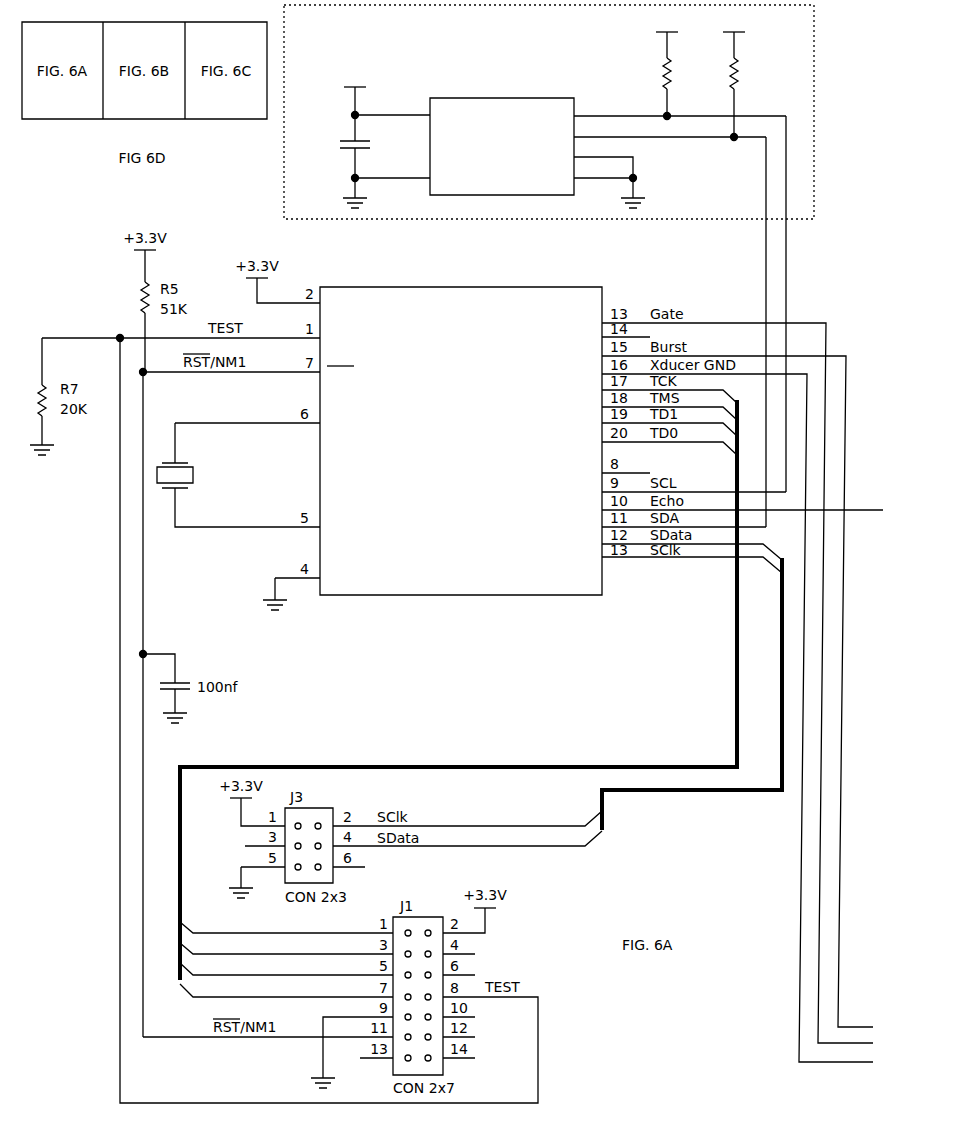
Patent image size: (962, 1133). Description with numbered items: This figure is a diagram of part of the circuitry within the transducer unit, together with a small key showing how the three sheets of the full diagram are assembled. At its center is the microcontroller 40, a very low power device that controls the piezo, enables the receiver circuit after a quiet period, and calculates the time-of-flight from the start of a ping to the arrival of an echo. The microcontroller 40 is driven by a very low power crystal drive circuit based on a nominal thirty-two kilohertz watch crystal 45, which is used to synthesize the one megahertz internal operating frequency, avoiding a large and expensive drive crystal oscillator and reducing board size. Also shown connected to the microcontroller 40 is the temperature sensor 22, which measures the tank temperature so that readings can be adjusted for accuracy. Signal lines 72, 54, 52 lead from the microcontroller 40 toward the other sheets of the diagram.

The temperature sensor 22 is at (815, 72).
The microcontroller 40 is at (485, 287).
The watch crystal 45 is at (158, 482).
The echo signal line 72 is at (855, 508).
The burst output line 54 is at (847, 1027).
The gate output line 52 is at (846, 1045).